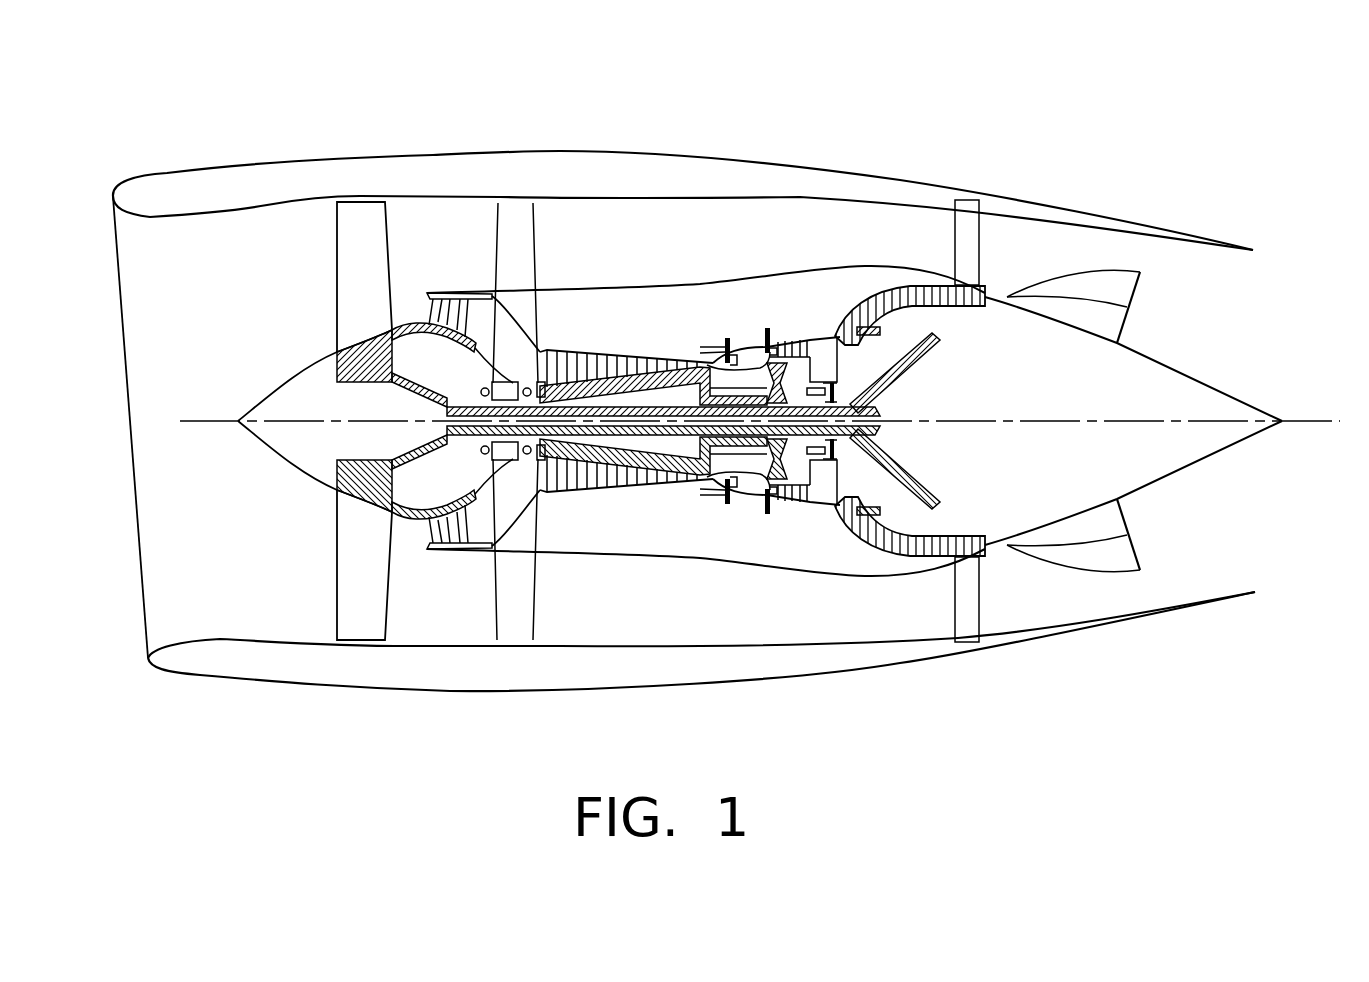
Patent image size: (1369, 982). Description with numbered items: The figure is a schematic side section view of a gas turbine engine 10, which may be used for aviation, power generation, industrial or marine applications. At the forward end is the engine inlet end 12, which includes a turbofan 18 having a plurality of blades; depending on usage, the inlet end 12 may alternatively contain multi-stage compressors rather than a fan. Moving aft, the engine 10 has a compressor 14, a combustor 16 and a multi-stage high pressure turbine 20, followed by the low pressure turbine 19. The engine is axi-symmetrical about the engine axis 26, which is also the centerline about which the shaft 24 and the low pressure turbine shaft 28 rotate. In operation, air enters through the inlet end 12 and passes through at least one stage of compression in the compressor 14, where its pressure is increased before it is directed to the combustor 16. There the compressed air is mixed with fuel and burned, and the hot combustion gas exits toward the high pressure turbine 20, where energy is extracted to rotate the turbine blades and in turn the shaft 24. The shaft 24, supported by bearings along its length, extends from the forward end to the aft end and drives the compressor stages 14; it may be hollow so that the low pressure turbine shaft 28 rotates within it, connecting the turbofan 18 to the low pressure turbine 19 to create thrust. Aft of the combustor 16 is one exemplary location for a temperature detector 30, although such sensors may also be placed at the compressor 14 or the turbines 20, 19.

The gas turbine engine 10 is at (1005, 128).
The engine inlet end 12 is at (137, 252).
The turbofan 18 is at (358, 237).
The compressor 14 is at (589, 333).
The combustor 16 is at (724, 518).
The temperature detector 30 is at (765, 330).
The shaft 24 is at (745, 470).
The multi-stage high pressure turbine 20 is at (805, 305).
The low pressure turbine shaft 28 is at (615, 436).
The low pressure turbine 19 is at (892, 575).
The engine axis 26 is at (1346, 421).